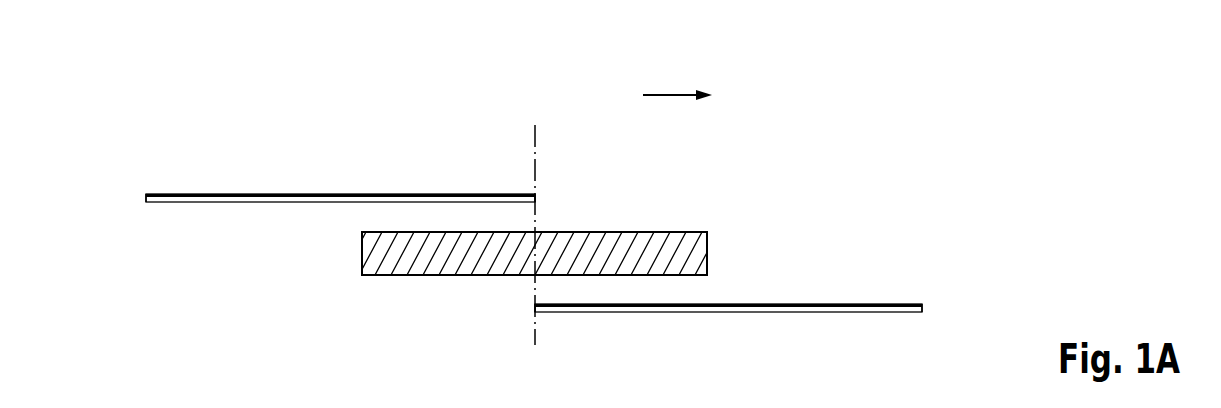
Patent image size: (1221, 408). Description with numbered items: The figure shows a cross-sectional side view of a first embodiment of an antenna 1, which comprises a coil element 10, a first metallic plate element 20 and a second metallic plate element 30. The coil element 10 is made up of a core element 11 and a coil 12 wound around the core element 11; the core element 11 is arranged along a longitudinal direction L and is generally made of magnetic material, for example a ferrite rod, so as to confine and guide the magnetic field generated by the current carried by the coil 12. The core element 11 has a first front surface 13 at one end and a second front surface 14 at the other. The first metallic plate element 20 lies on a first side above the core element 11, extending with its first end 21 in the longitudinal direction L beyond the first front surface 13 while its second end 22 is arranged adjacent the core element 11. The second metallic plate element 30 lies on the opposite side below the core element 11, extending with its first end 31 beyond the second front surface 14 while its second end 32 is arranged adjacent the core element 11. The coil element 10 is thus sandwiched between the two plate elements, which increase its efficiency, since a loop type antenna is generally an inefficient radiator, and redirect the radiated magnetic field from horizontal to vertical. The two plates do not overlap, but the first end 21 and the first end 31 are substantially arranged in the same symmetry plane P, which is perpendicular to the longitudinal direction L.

The antenna 1 is at (900, 152).
The coil element 10 is at (692, 195).
The core element 11 is at (698, 263).
The coil 12 is at (646, 238).
The first front surface 13 is at (348, 262).
The second front surface 14 is at (721, 237).
The first metallic plate element 20 is at (201, 193).
The first end of first metallic plate element 21 is at (132, 196).
The second end of first metallic plate element 22 is at (550, 196).
The second metallic plate element 30 is at (862, 303).
The first end of second metallic plate element 31 is at (938, 307).
The second end of second metallic plate element 32 is at (521, 306).
The symmetry plane P is at (537, 131).
The longitudinal direction L is at (666, 93).